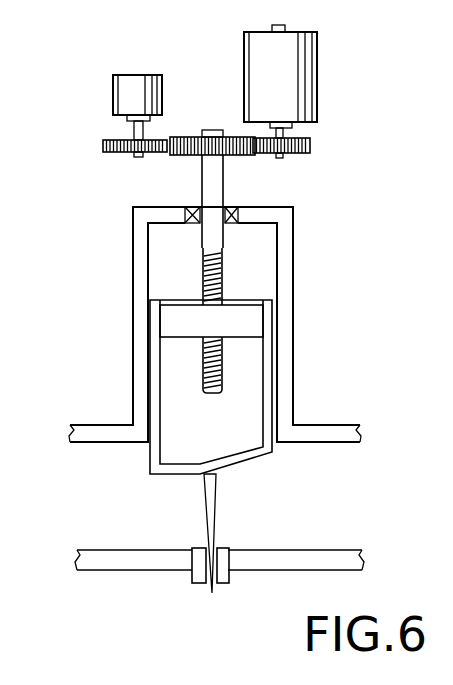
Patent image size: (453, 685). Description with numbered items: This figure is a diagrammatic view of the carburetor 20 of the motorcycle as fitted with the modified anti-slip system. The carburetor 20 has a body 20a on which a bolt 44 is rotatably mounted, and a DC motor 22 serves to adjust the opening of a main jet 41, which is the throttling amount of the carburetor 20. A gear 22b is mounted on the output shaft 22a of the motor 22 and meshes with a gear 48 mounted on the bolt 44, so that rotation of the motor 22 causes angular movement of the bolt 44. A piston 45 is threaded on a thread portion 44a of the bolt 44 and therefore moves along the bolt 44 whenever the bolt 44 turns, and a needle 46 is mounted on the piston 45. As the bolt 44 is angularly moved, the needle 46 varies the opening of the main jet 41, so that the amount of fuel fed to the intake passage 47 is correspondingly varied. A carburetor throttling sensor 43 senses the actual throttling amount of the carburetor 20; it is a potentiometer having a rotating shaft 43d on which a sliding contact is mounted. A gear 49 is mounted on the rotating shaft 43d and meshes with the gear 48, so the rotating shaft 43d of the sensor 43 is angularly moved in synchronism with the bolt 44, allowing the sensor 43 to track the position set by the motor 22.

The carburetor 20 is at (315, 290).
The body 20a is at (293, 245).
The DC motor 22 is at (317, 80).
The output shaft 22a is at (283, 158).
The gear 22b is at (312, 147).
The main jet 41 is at (232, 583).
The carburetor throttling sensor 43 is at (155, 75).
The rotating shaft 43d is at (137, 157).
The bolt 44 is at (222, 190).
The thread portion 44a is at (223, 283).
The piston 45 is at (265, 410).
The needle 46 is at (217, 500).
The intake passage 47 is at (133, 506).
The gear 48 is at (192, 155).
The gear 49 is at (103, 147).